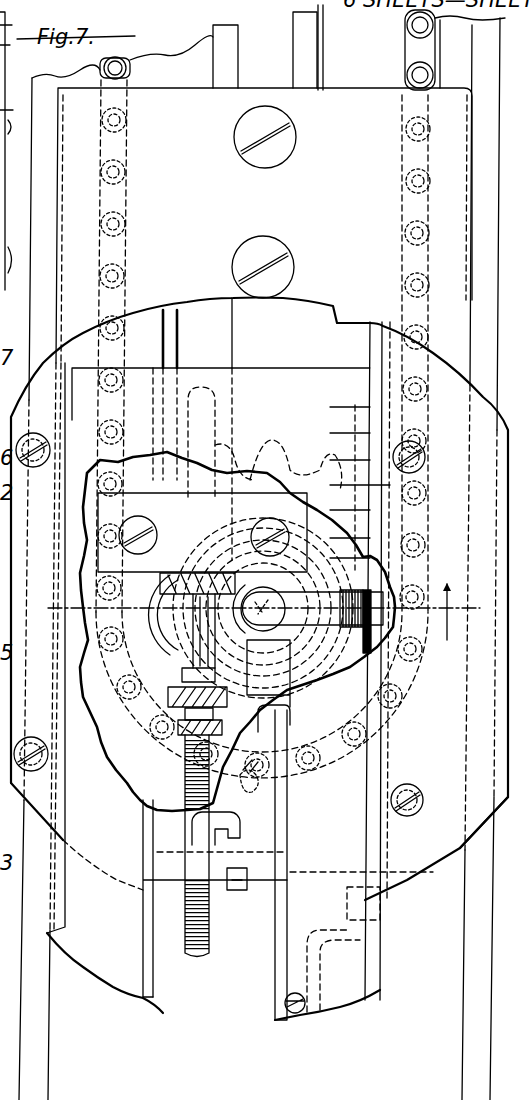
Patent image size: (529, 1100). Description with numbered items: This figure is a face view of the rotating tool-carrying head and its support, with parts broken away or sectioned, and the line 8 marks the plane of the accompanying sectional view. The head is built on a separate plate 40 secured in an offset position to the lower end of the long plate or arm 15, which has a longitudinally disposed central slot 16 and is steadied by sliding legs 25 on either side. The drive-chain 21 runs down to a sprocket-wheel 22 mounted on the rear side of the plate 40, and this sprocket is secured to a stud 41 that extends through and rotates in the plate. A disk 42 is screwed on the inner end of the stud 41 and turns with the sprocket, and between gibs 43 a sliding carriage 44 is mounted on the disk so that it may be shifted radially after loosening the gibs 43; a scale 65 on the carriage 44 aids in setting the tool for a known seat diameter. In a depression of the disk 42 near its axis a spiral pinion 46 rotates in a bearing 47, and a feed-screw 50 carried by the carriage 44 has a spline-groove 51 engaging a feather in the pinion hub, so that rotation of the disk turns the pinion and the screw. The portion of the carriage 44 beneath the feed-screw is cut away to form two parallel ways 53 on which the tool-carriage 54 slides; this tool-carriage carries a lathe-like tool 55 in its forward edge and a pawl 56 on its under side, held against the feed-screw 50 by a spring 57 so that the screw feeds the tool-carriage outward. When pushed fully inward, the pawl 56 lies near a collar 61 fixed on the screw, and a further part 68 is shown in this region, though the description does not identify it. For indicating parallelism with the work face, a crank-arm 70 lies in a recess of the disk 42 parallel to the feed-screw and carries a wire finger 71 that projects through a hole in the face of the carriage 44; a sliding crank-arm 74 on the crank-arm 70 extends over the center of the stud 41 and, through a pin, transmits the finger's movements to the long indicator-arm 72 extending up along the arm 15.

The section line 8 8 is at (259, 616).
The plate or arm 15 is at (148, 66).
The central slot 16 is at (262, 33).
The drive-chain 21 is at (419, 47).
The sprocket-wheel 22 is at (353, 677).
The sliding legs 25 is at (34, 1067).
The plate 40 is at (261, 509).
The stud 41 is at (290, 660).
The disk 42 is at (290, 337).
The gibs 43 is at (418, 850).
The sliding carriage 44 is at (287, 380).
The spiral pinion 46 is at (175, 600).
The bearing 47 is at (227, 477).
The feed-screw 50 is at (202, 957).
The spline-groove 51 is at (205, 383).
The parallel ways 53 is at (215, 867).
The tool-carriage 54 is at (160, 860).
The tool 55 is at (238, 891).
The pawl 56 is at (231, 792).
The spring 57 is at (248, 778).
The collar 61 is at (180, 725).
The scale 65 is at (337, 429).
The hook 68 is at (222, 826).
The crank-arm 70 is at (381, 636).
The wire finger 71 is at (294, 1012).
The long arm 72 is at (329, 43).
The crank-arm 74 is at (400, 560).